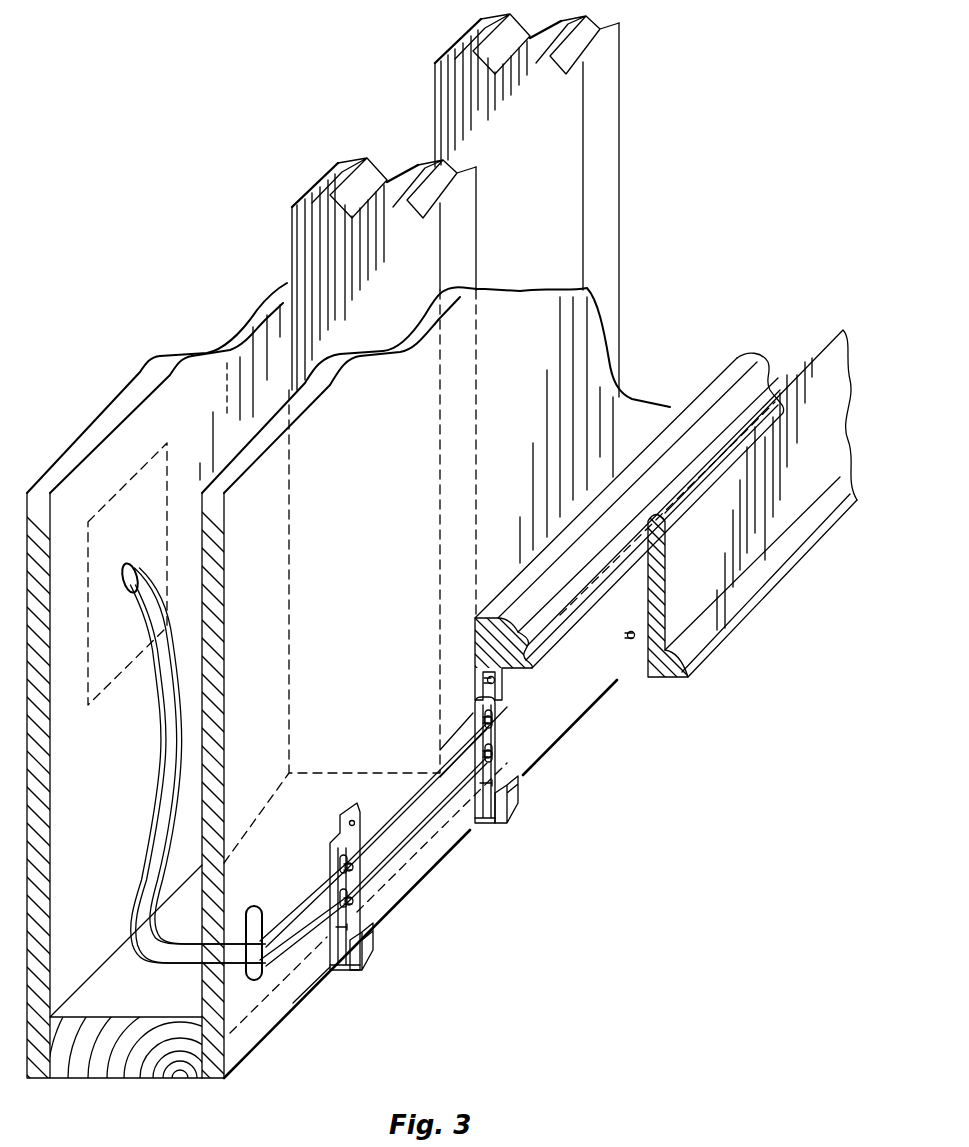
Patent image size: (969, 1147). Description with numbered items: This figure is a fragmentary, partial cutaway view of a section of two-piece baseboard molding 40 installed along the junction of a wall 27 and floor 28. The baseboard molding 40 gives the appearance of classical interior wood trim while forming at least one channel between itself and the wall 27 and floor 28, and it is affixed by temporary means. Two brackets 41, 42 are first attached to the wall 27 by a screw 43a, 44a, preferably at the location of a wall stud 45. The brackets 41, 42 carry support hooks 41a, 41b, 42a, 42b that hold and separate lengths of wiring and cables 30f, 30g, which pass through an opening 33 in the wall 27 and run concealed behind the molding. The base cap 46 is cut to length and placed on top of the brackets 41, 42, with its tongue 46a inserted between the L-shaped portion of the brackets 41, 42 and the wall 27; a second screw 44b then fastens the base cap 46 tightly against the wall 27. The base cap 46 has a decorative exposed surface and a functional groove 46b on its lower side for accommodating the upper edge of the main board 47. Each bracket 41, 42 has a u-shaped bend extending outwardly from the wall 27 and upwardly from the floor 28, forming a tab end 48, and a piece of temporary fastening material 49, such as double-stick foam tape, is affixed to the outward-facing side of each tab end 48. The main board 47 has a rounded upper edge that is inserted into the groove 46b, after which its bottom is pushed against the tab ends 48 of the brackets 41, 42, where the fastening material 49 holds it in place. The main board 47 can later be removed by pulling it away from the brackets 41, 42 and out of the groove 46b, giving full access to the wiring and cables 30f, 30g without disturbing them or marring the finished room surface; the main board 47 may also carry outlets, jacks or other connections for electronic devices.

The wall 27 is at (388, 350).
The floor 28 is at (736, 870).
The wiring and cables 30f is at (152, 768).
The wiring and cables 30g is at (167, 828).
The opening 33 is at (256, 983).
The baseboard molding 40 is at (847, 322).
The bracket 41 is at (300, 1002).
The support hook 41a is at (355, 868).
The support hook 41b is at (356, 905).
The bracket 42 is at (471, 832).
The support hook 42a is at (500, 750).
The support hook 42b is at (502, 760).
The screw 43a is at (342, 932).
The screw 44a is at (483, 812).
The second screw 44b is at (500, 717).
The wall stud 45 is at (290, 240).
The base cap 46 is at (748, 358).
The tongue 46a is at (478, 683).
The groove 46b is at (600, 637).
The main board 47 is at (822, 428).
The tab end 48 is at (350, 970).
The fastening material 49 is at (365, 957).